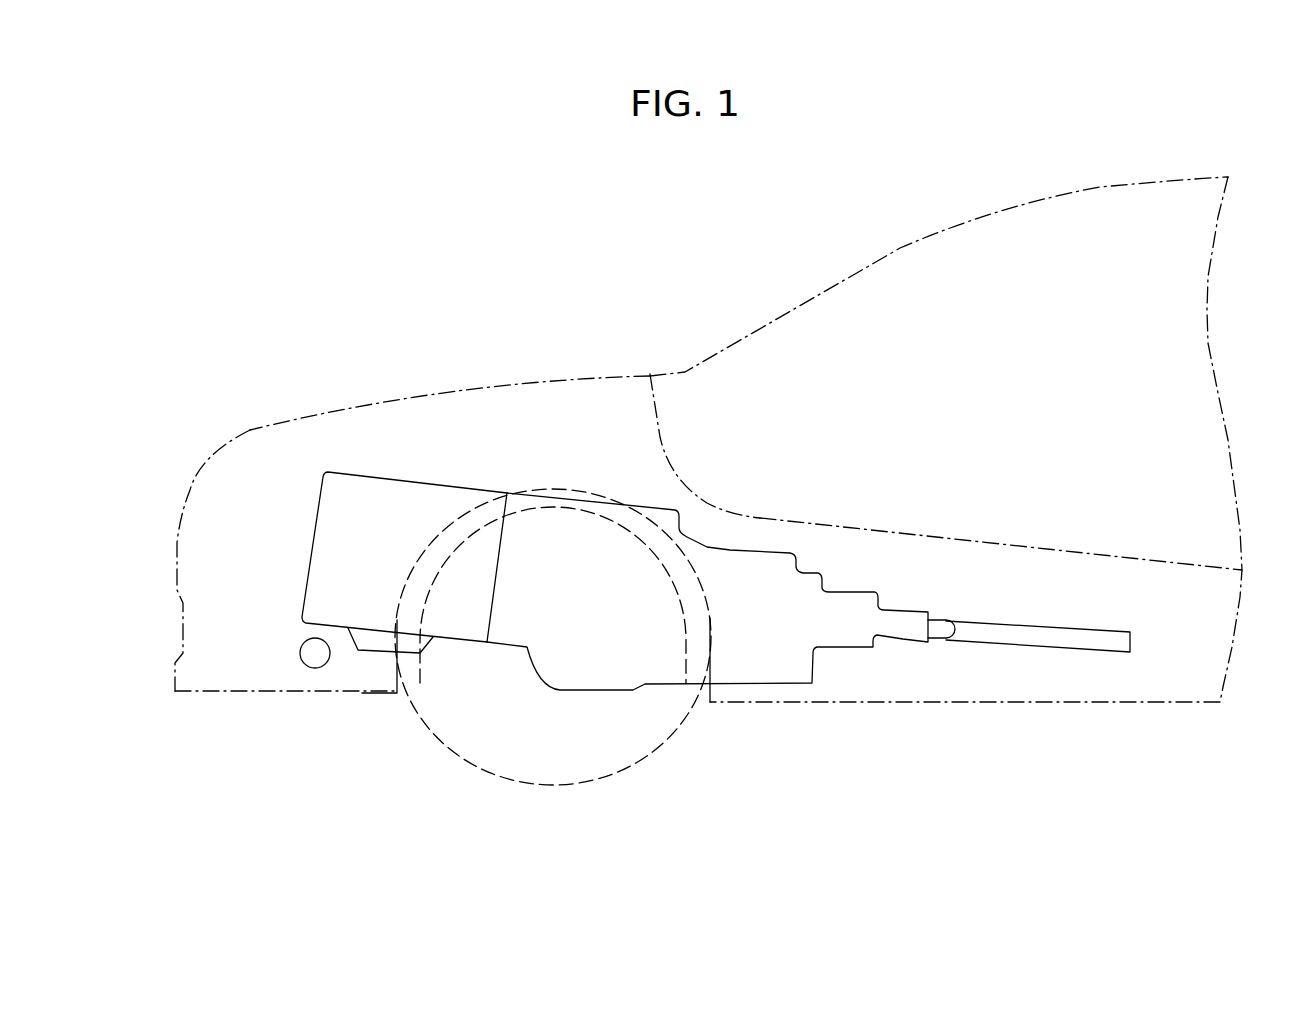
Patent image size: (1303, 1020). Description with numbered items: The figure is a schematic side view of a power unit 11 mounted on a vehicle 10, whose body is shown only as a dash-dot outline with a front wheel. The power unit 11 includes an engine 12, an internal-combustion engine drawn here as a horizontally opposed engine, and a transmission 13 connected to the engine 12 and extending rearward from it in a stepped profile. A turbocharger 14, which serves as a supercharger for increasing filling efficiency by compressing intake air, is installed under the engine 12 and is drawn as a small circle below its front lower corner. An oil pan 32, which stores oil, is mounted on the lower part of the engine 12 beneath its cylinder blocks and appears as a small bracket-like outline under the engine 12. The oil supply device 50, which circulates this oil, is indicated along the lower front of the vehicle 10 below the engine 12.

The vehicle 10 is at (243, 394).
The power unit 11 is at (291, 509).
The engine 12 is at (308, 563).
The transmission 13 is at (723, 568).
The turbocharger 14 is at (300, 652).
The oil pan 32 is at (375, 655).
The oil supply device 50 is at (270, 680).